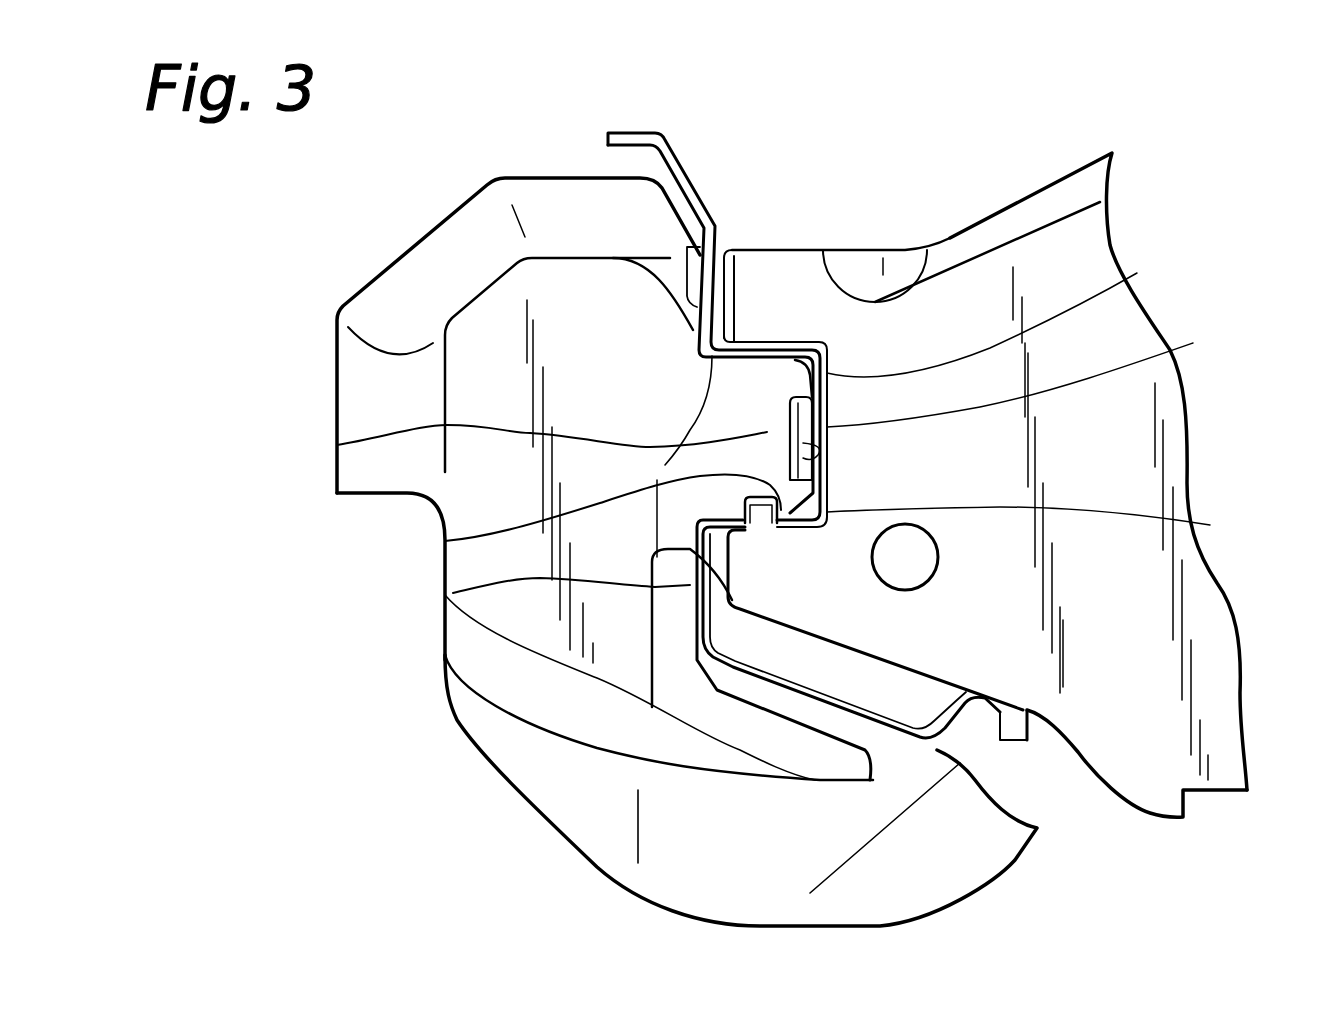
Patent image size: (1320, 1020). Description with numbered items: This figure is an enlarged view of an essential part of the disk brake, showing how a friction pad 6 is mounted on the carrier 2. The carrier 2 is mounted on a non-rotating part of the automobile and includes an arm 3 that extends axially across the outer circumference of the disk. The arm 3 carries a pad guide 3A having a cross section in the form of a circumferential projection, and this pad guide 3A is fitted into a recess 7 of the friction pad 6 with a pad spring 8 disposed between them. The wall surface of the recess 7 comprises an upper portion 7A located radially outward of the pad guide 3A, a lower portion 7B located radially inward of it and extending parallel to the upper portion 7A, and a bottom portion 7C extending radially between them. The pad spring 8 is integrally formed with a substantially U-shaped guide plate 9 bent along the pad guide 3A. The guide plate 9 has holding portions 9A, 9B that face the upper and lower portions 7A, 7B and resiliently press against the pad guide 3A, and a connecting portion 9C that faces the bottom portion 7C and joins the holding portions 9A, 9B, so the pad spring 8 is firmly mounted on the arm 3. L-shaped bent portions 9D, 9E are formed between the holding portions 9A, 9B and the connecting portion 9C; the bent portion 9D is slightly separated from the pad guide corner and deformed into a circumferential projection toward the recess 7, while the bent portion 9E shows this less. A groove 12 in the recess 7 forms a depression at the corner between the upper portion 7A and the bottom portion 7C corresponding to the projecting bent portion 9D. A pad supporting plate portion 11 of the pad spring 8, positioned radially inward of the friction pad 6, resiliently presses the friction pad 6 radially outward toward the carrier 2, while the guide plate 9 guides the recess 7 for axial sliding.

The carrier 2 is at (526, 174).
The arm 3 is at (350, 327).
The pad guide 3A is at (337, 445).
The friction pad 6 is at (1205, 694).
The recess 7 is at (827, 473).
The upper portion 7A is at (807, 345).
The lower portion 7B is at (445, 541).
The bottom portion 7C is at (1031, 377).
The pad spring 8 is at (666, 136).
The guide plate 9 is at (783, 345).
The holding portion 9A is at (748, 338).
The holding portion 9B is at (453, 593).
The connecting portion 9C is at (1006, 315).
The bent portion 9D is at (843, 357).
The bent portion 9E is at (1041, 526).
The pad supporting plate portion 11 is at (1003, 741).
The groove 12 is at (813, 345).